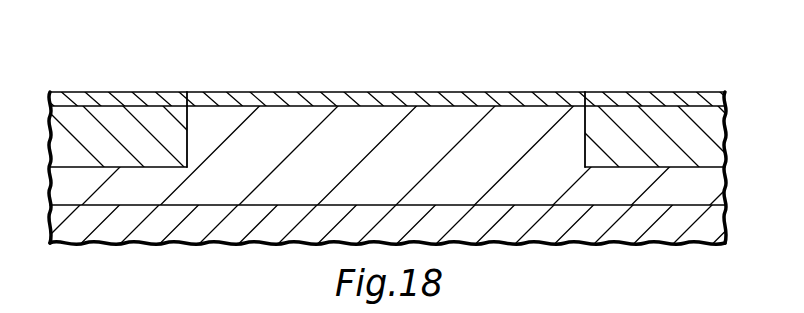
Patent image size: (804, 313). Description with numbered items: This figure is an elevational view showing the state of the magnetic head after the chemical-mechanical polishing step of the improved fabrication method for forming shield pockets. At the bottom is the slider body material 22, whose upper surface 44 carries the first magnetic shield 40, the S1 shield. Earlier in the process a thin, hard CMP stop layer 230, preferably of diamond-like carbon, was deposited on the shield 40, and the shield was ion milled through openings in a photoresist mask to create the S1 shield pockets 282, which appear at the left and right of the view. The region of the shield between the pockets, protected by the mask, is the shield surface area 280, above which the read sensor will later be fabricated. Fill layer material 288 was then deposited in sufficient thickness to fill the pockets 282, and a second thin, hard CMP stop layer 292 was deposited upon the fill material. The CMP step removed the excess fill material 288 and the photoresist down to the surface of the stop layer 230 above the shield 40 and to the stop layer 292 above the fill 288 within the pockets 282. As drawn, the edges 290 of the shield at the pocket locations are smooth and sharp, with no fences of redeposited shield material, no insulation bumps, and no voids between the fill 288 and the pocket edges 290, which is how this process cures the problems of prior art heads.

The slider body material 22 is at (669, 229).
The first magnetic shield 40 is at (492, 179).
The surface of the slider body material 44 is at (377, 205).
The CMP stop layer 230 is at (308, 103).
The masked surface area of the S1 shield 280 is at (425, 103).
The S1 shield pocket 282 is at (110, 76).
The fill layer material 288 is at (84, 117).
The edges of the shield 290 is at (189, 100).
The second CMP stop layer 292 is at (134, 101).